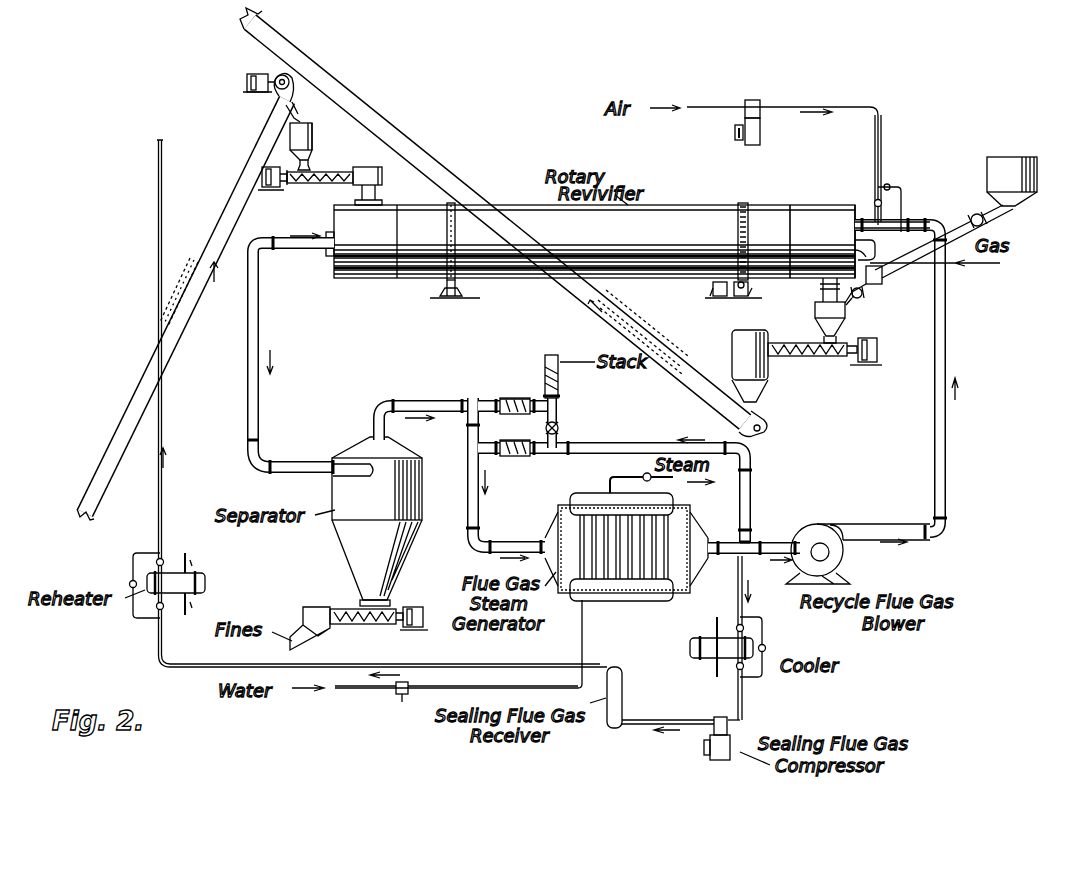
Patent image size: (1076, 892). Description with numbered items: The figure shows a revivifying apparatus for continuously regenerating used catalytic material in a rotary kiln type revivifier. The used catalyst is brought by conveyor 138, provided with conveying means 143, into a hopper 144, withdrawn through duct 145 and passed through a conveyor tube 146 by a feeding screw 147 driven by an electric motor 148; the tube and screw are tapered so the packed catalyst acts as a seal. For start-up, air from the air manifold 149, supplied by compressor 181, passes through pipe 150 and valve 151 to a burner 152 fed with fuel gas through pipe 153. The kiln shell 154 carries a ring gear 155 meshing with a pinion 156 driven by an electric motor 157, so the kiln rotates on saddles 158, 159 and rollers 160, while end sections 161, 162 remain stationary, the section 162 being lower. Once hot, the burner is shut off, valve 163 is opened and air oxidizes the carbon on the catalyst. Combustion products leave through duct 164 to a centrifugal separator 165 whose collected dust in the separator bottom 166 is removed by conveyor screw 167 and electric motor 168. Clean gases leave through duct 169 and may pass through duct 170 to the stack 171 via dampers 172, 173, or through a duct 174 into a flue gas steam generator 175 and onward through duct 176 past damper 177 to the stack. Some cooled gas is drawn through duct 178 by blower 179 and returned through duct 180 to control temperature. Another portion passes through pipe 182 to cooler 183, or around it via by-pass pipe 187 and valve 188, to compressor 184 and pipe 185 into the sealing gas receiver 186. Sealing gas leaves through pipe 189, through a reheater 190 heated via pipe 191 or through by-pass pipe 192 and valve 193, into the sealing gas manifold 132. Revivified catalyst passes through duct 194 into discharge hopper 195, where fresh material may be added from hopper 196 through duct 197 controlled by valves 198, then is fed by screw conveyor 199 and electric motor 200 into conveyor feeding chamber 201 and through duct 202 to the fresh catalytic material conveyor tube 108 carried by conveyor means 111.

The fresh catalytic material conveyor tube 108 is at (362, 110).
The conveyor means 111 is at (625, 340).
The sealing gas manifold 132 is at (163, 186).
The conveyor 138 is at (135, 403).
The conveying means 143 is at (190, 310).
The hopper 144 is at (316, 135).
The duct 145 is at (312, 165).
The conveyor tube 146 is at (345, 185).
The feeding screw 147 is at (305, 190).
The electric motor 148 is at (268, 190).
The air manifold 149 is at (881, 155).
The pipe 150 is at (902, 218).
The valve 151 is at (896, 185).
The burner 152 is at (870, 250).
The pipe 153 is at (887, 280).
The kiln shell 154 is at (688, 205).
The ring gear 155 is at (743, 205).
The pinion 156 is at (750, 292).
The electric motor 157 is at (716, 298).
The saddle 158 is at (462, 292).
The saddle 159 is at (740, 298).
The rollers 160 is at (451, 300).
The end section 161 is at (358, 280).
The end section 162 is at (818, 205).
The valve 163 is at (875, 200).
The duct 164 is at (262, 320).
The centrifugal separator 165 is at (342, 548).
The separator bottom 166 is at (358, 572).
The conveyor screw 167 is at (362, 625).
The electric motor 168 is at (418, 607).
The duct 169 is at (430, 403).
The duct 170 is at (503, 398).
The stack 171 is at (545, 358).
The damper 172 is at (524, 440).
The damper 173 is at (560, 385).
The flue gas duct 174 is at (482, 520).
The flue gas steam generator 175 is at (690, 510).
The duct 176 is at (642, 446).
The damper 177 is at (566, 430).
The duct 178 is at (772, 543).
The blower 179 is at (820, 525).
The duct 180 is at (938, 425).
The compressor 181 is at (760, 106).
The pipe 182 is at (740, 580).
The cooler 183 is at (706, 660).
The compressor 184 is at (736, 736).
The pipe 185 is at (650, 726).
The sealing gas receiver 186 is at (622, 688).
The by-pass pipe 187 is at (766, 640).
The valve 188 is at (766, 648).
The pipe 189 is at (450, 672).
The reheater 190 is at (206, 583).
The pipe 191 is at (188, 556).
The by-pass pipe 192 is at (130, 568).
The valve 193 is at (130, 588).
The duct 194 is at (818, 305).
The discharge hopper 195 is at (845, 316).
The hopper 196 is at (1032, 176).
The duct 197 is at (984, 222).
The valve 198 is at (977, 212).
The screw conveyor 199 is at (815, 357).
The electric motor 200 is at (878, 348).
The conveyor feeding chamber 201 is at (732, 350).
The duct 202 is at (760, 390).